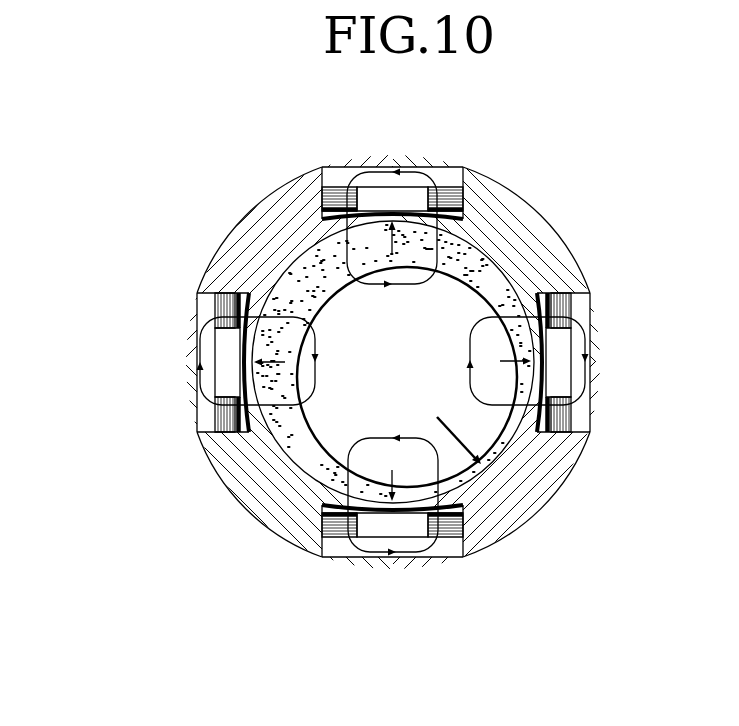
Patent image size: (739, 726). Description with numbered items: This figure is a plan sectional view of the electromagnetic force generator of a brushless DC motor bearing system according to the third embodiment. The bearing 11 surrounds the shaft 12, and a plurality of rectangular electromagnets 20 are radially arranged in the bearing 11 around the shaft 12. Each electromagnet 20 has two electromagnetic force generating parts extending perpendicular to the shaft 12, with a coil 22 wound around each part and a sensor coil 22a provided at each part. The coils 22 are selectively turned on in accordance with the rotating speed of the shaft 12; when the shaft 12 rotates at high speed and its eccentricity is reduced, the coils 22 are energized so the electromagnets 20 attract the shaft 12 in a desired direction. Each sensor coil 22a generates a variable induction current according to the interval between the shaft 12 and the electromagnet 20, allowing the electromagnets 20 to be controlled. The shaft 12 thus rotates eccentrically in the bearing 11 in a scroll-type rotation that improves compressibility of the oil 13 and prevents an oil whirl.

The bearing 11 is at (253, 480).
The shaft 12 is at (348, 418).
The oil 13 is at (308, 279).
The electromagnet 20 is at (200, 395).
The coil 22 is at (218, 304).
The sensor coil 22a is at (237, 290).